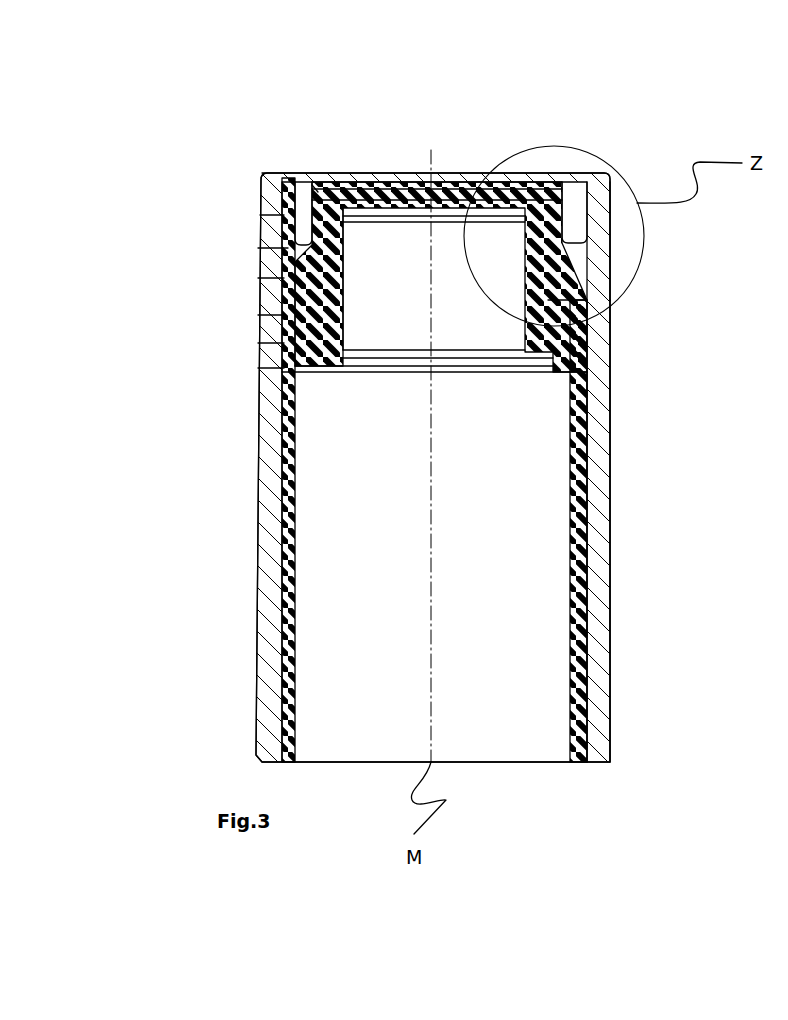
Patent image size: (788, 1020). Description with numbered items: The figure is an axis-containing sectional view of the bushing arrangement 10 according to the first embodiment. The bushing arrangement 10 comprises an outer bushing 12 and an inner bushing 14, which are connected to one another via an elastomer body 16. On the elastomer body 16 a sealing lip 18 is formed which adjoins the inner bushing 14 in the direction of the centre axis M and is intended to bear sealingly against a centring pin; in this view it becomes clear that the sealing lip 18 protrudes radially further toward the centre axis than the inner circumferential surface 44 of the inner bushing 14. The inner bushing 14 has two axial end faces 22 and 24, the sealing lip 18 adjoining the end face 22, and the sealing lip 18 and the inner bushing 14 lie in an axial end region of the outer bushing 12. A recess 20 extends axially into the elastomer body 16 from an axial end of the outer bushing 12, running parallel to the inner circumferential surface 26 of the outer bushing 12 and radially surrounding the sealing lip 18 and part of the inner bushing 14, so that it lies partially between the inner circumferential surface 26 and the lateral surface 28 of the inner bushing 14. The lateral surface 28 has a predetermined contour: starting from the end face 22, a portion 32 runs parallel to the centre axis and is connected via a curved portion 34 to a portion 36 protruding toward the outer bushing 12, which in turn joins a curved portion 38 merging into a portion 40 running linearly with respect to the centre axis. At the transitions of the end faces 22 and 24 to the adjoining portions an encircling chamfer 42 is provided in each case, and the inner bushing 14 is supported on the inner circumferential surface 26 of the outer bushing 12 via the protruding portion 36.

The bushing arrangement 10 is at (638, 142).
The outer bushing 12 is at (285, 519).
The inner bushing 14 is at (610, 353).
The elastomer body 16 is at (587, 517).
The sealing lip 18 is at (385, 173).
The recess 20 is at (281, 173).
The axial end face 22 is at (530, 200).
The axial end face 24 is at (585, 373).
The inner circumferential surface 26 is at (283, 462).
The lateral surface 28 is at (607, 298).
The portion 32 is at (260, 215).
The curved portion 34 is at (258, 248).
The protruding portion 36 is at (258, 278).
The curved portion 38 is at (258, 315).
The portion 40 is at (258, 343).
The encircling chamfer 42 is at (258, 368).
The inner circumferential surface 44 is at (345, 300).